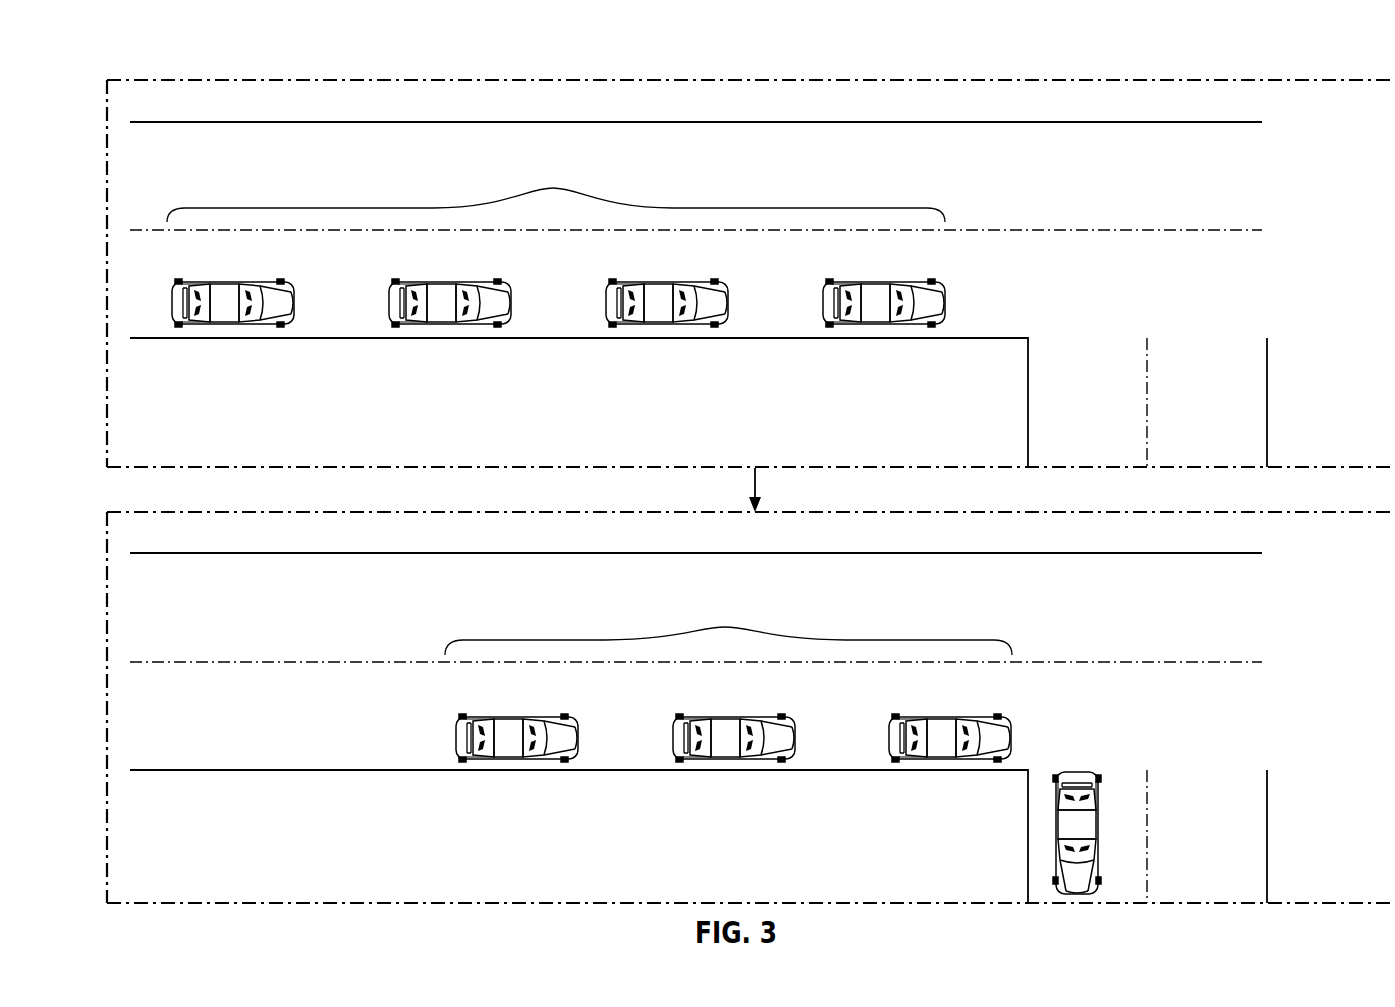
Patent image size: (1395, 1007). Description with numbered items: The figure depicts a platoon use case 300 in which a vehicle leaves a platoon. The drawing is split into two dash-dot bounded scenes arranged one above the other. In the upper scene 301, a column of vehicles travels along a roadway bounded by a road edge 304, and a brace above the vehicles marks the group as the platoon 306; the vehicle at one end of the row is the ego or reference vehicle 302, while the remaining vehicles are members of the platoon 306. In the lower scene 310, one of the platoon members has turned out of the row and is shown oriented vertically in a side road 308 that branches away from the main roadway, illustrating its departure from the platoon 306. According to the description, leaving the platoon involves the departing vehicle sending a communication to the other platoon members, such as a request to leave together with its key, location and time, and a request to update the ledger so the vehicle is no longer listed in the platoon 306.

The platoon use case 300 is at (713, 246).
The first scene 301 is at (1323, 80).
The ego vehicle 302 is at (216, 279).
The road edge 304 is at (198, 121).
The platoon 306 is at (589, 401).
The side road 308 is at (1224, 407).
The second scene 310 is at (175, 511).